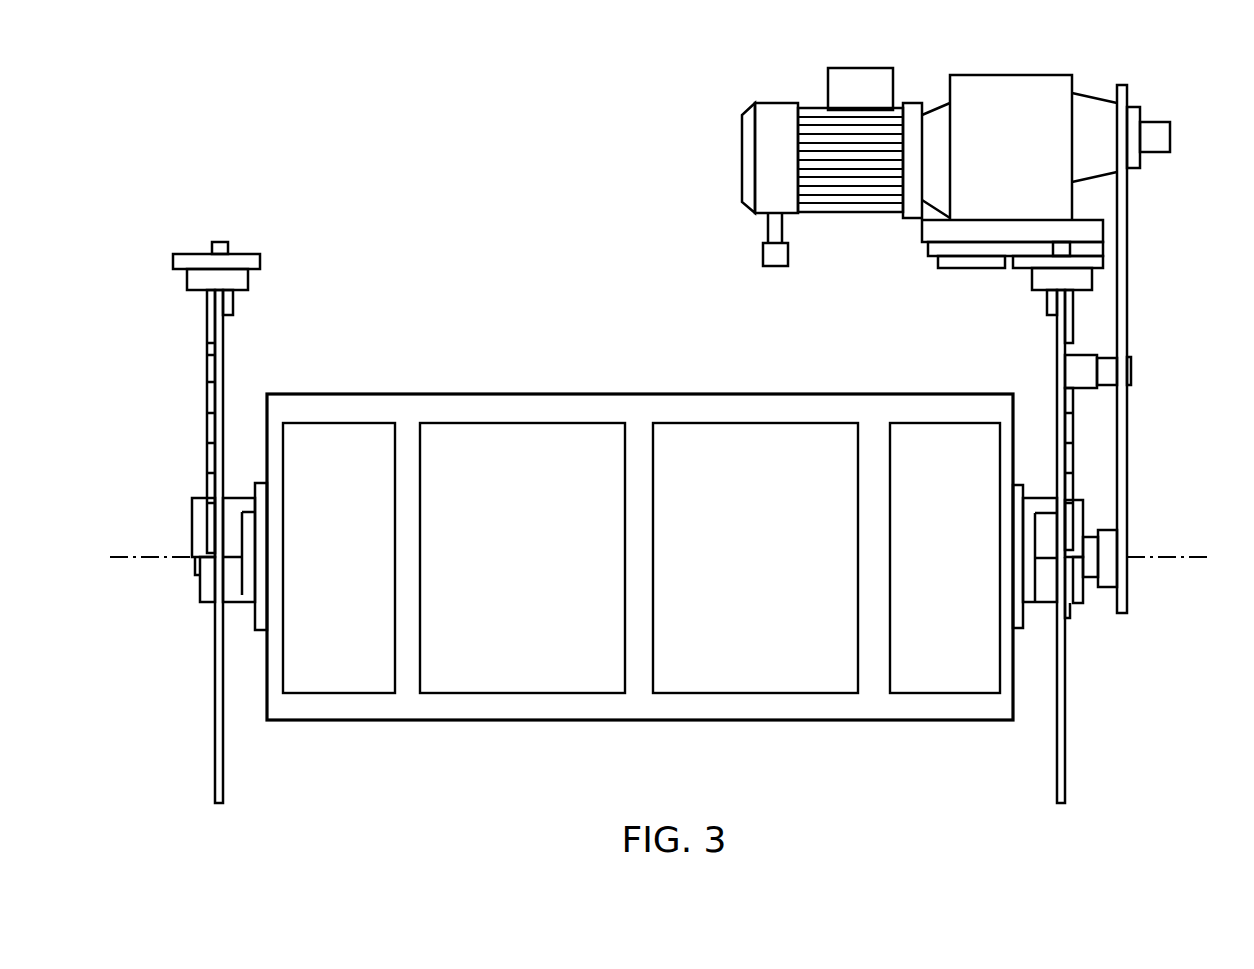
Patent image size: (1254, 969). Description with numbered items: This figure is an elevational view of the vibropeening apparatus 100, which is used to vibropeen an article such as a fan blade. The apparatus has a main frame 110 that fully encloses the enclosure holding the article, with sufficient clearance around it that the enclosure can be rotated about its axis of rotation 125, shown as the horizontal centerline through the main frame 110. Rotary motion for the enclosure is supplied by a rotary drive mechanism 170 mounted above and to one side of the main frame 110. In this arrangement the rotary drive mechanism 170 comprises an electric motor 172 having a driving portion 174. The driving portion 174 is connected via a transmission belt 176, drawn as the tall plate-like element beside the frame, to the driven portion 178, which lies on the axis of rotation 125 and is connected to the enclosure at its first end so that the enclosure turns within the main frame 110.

The vibropeening apparatus 100 is at (486, 229).
The main frame 110 is at (588, 720).
The axis of rotation 125 is at (1155, 556).
The rotary drive mechanism 170 is at (1015, 75).
The electric motor 172 is at (770, 102).
The driving portion 174 is at (1130, 107).
The transmission belt 176 is at (1128, 308).
The driven portion 178 is at (1104, 576).